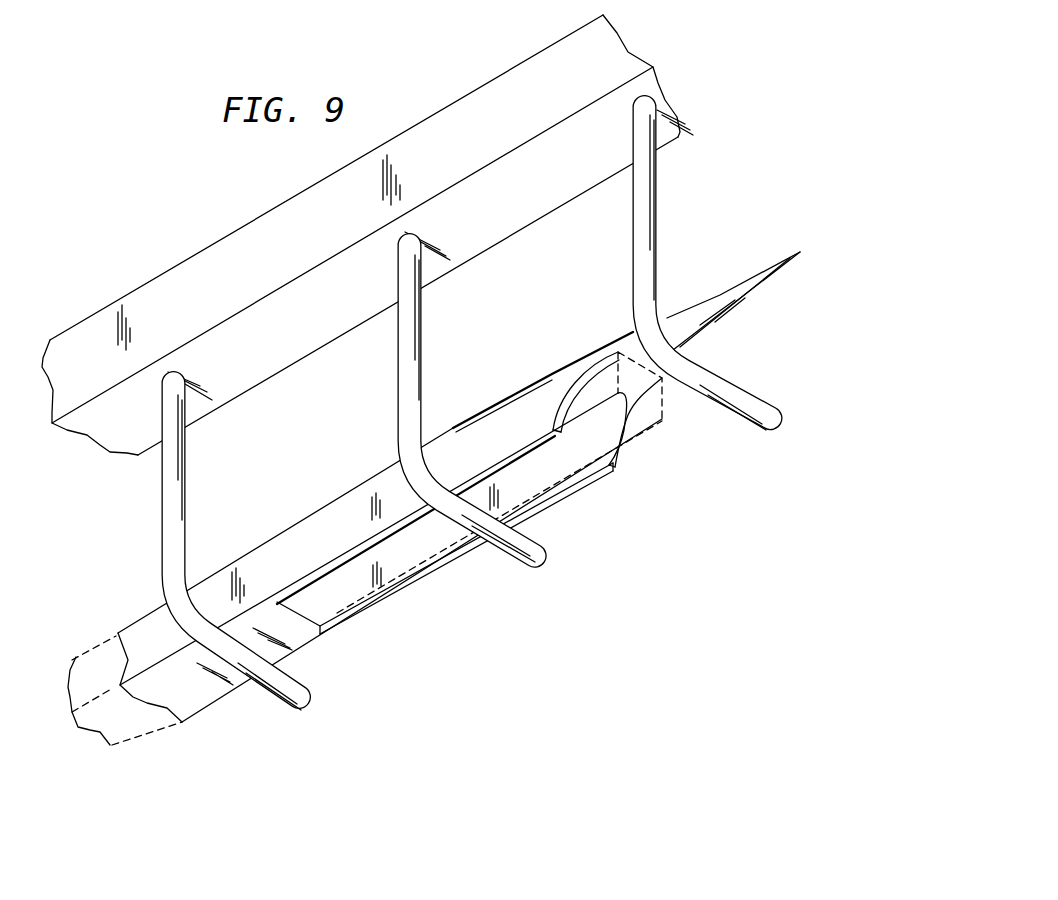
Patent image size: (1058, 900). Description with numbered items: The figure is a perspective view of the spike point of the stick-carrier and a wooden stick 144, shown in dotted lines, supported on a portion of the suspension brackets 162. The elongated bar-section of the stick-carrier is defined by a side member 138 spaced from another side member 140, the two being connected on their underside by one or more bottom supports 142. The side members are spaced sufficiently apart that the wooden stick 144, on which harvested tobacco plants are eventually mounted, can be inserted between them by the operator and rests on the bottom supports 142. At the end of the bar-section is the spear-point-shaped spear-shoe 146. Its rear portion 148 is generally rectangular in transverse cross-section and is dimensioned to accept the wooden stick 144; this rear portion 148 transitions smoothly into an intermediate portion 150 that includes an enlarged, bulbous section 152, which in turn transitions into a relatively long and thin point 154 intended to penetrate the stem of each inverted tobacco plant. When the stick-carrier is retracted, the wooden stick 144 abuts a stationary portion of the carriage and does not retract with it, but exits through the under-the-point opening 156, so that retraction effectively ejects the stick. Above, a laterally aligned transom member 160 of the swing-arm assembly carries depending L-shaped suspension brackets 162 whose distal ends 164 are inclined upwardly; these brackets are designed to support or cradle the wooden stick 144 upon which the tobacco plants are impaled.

The side member 138 is at (143, 618).
The side member 140 is at (376, 603).
The bottom support 142 is at (208, 685).
The wooden stick 144 is at (663, 427).
The spear-shoe 146 is at (760, 226).
The rear portion 148 is at (393, 473).
The intermediate portion 150 is at (544, 336).
The bulbous section 152 is at (453, 425).
The point 154 is at (800, 252).
The under-the-point opening 156 is at (647, 457).
The transom member 160 is at (630, 52).
The suspension bracket 162 is at (175, 500).
The distal end 164 is at (773, 407).